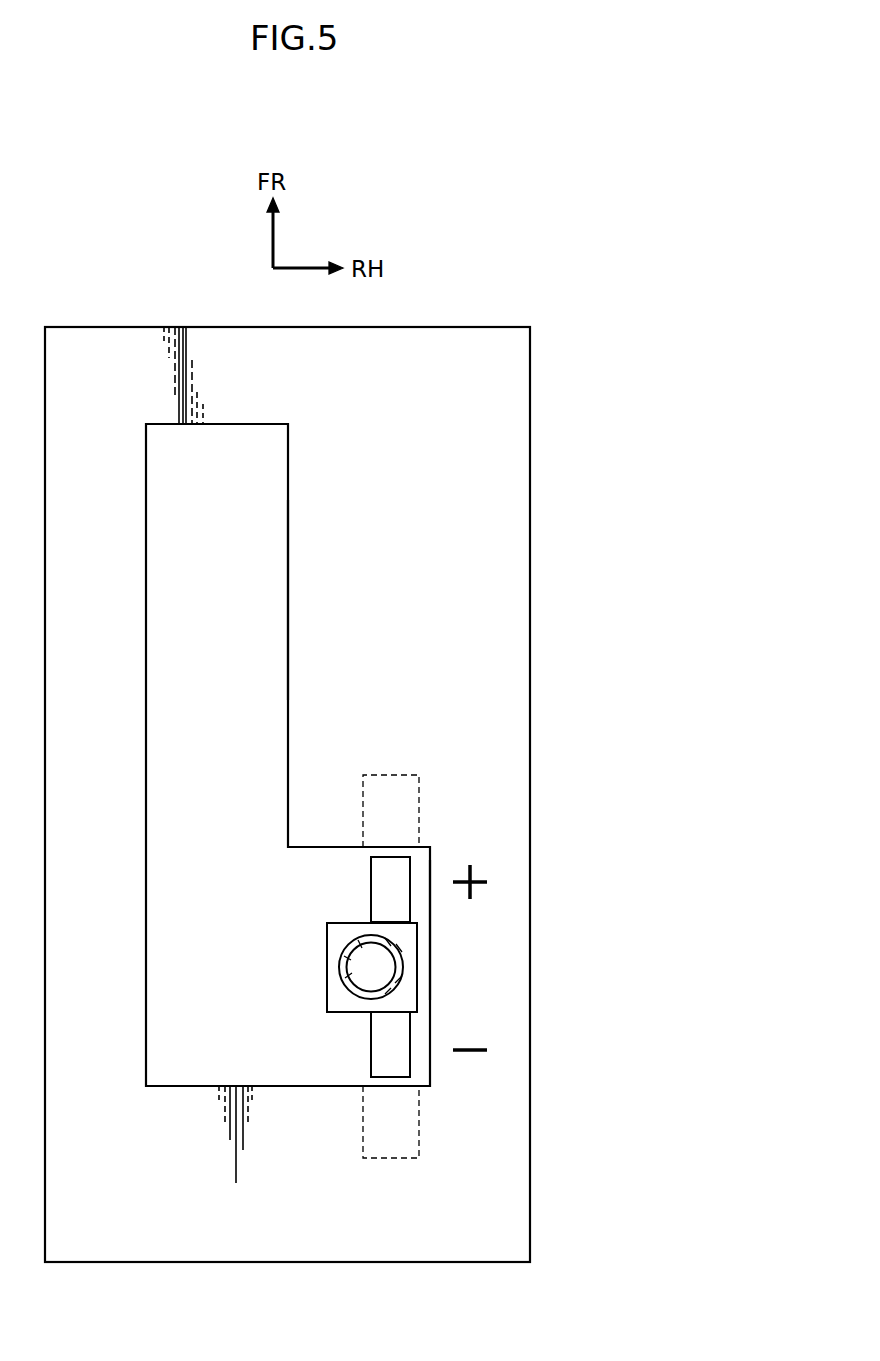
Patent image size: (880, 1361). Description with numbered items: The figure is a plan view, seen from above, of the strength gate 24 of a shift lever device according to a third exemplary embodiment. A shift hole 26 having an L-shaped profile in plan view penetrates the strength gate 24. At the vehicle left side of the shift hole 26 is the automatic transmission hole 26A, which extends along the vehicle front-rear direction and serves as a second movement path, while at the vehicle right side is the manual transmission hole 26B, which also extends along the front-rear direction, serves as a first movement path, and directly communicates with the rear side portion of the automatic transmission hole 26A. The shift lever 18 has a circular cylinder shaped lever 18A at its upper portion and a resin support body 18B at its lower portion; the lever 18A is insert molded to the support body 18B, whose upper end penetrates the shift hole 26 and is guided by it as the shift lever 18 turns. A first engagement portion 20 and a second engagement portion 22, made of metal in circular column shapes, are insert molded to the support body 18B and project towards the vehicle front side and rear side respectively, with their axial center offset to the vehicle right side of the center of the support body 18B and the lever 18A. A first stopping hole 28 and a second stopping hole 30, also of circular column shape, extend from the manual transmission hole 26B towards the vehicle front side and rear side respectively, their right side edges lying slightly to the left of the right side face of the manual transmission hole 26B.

The strength gate 24 is at (105, 282).
The shift hole 26 is at (236, 424).
The automatic transmission hole 26A is at (288, 597).
The manual transmission hole 26B is at (430, 918).
The first stopping hole 28 is at (390, 787).
The second stopping hole 30 is at (384, 1158).
The first engagement portion 20 is at (371, 890).
The second engagement portion 22 is at (371, 1042).
The shift lever 18 is at (324, 960).
The lever 18A is at (348, 944).
The support body 18B is at (327, 998).